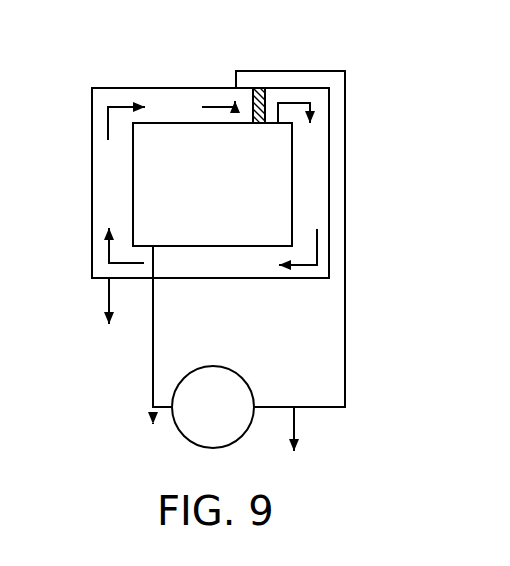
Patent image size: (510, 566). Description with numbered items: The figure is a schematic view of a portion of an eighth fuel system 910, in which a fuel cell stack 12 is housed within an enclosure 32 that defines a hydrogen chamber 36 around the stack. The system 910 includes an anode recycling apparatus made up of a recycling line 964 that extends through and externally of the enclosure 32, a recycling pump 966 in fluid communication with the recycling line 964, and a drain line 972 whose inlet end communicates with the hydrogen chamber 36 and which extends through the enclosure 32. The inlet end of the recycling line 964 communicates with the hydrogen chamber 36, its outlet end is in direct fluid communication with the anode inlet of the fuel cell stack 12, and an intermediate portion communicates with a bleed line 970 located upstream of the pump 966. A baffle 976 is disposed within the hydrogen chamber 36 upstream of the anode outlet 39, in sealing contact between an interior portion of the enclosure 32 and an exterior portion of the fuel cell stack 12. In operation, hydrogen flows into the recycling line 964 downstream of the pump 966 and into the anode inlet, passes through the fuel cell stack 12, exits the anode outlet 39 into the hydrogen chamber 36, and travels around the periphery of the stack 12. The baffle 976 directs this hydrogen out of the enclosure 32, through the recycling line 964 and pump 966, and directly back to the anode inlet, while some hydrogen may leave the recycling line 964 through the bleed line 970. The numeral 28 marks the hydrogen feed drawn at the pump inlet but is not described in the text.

The eighth fuel system 910 is at (158, 60).
The hydrogen chamber 36 is at (318, 186).
The fuel cell stack 12 is at (225, 195).
The enclosure 32 is at (289, 92).
The baffle 976 is at (262, 97).
The anode outlet 39 is at (279, 119).
The recycling line 964 is at (346, 300).
The recycling pump 966 is at (238, 370).
The bleed line 970 is at (296, 432).
The drain line 972 is at (109, 306).
The hydrogen inlet 28 is at (143, 465).